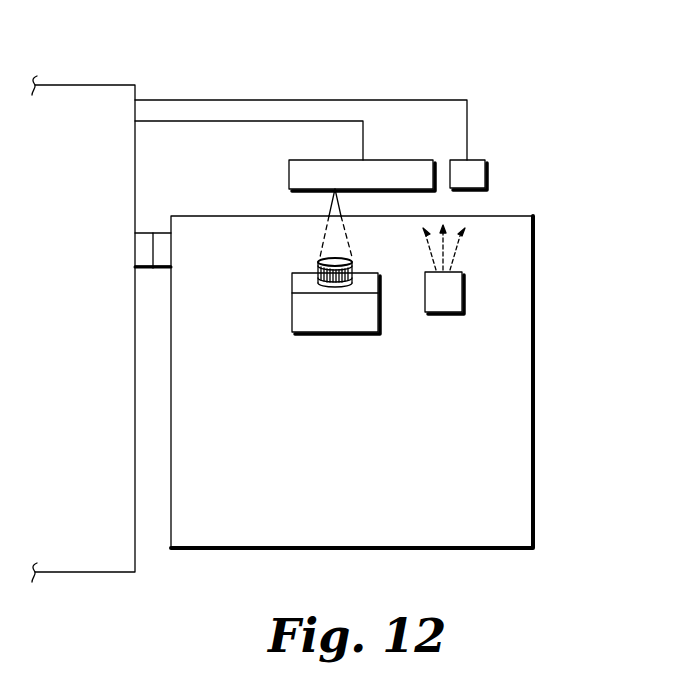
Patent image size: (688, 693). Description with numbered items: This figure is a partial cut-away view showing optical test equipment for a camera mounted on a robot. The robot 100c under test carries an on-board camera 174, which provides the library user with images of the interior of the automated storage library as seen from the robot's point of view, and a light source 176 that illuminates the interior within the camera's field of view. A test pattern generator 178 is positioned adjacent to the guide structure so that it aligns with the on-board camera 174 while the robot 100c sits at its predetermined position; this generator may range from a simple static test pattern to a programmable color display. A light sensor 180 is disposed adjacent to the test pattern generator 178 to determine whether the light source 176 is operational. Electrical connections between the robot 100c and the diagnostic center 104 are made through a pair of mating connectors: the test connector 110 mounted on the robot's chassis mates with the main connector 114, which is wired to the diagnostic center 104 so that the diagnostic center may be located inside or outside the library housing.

The diagnostic center 104 is at (100, 110).
The test pattern generator 178 is at (300, 173).
The light sensor 180 is at (473, 177).
The robot 100c is at (503, 442).
The main connector 114 is at (142, 252).
The test connector 110 is at (165, 252).
The on-board camera 174 is at (325, 334).
The light source 176 is at (443, 313).